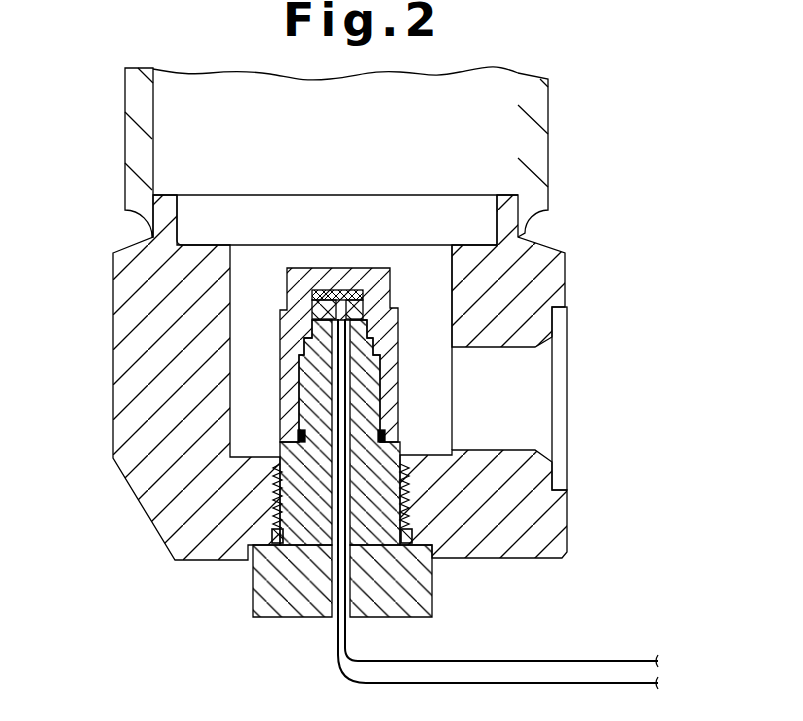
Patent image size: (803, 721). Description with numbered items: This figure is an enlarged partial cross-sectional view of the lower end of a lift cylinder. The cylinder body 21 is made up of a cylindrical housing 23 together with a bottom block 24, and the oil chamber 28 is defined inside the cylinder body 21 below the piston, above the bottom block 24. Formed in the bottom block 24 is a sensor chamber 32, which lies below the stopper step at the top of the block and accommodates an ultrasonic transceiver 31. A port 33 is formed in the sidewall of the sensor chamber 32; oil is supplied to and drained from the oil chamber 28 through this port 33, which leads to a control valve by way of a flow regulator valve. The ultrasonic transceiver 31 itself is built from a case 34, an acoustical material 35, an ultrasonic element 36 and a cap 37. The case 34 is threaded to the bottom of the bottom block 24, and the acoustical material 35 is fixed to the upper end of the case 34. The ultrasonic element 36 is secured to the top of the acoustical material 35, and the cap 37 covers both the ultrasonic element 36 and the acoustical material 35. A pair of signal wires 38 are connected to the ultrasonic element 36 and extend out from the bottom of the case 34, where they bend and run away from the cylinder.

The cylinder body 21 is at (125, 84).
The cylindrical housing 23 is at (130, 150).
The bottom block 24 is at (118, 371).
The oil chamber 28 is at (500, 121).
The ultrasonic transceiver 31 is at (374, 236).
The sensor chamber 32 is at (450, 258).
The port 33 is at (567, 477).
The case 34 is at (432, 592).
The acoustical material 35 is at (312, 310).
The ultrasonic element 36 is at (330, 290).
The cap 37 is at (387, 278).
The signal wires 38 is at (595, 662).